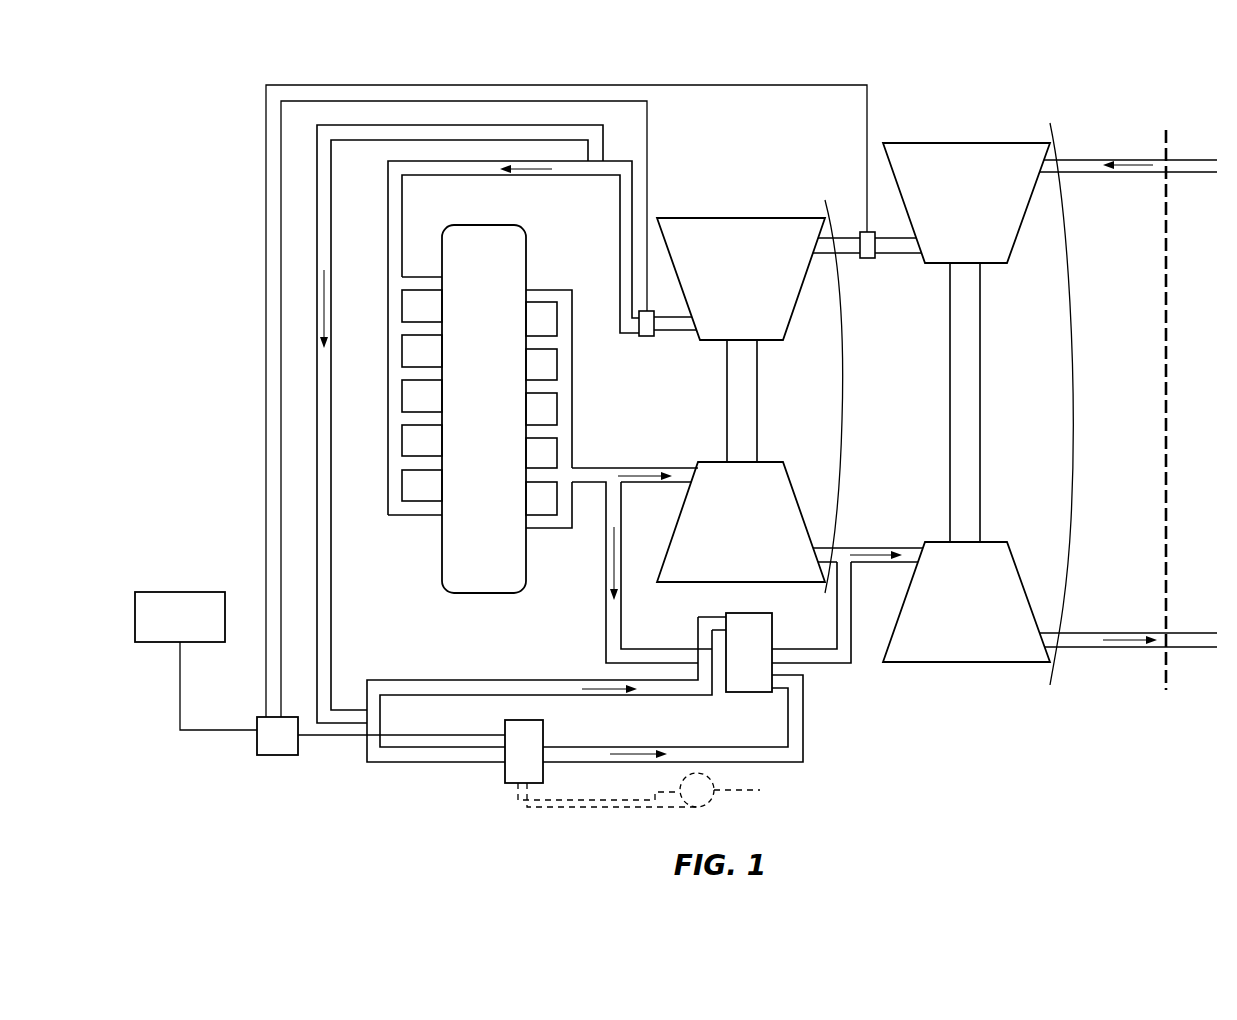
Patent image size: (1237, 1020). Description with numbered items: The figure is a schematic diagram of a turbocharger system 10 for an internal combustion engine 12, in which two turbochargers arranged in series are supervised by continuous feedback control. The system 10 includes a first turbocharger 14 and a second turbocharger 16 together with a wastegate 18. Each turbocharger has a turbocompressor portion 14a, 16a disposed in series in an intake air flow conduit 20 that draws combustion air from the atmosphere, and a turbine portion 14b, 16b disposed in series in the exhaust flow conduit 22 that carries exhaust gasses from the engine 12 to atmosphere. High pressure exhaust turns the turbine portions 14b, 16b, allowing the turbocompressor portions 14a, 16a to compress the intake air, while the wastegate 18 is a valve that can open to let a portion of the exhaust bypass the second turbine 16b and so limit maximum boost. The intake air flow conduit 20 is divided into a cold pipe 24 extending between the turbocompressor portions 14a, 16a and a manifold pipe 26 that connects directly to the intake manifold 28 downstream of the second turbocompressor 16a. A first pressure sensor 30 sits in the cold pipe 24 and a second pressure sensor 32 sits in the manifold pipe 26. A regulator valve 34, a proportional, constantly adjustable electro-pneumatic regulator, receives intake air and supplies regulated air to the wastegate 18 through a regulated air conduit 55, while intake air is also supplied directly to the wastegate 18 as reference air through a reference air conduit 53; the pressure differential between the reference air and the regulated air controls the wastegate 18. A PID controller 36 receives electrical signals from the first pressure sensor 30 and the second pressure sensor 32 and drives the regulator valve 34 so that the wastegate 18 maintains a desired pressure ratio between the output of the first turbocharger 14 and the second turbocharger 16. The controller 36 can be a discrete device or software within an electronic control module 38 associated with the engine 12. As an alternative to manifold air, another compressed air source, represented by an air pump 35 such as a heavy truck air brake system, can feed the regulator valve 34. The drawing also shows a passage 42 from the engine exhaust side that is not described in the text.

The turbocharger system 10 is at (958, 90).
The internal combustion engine 12 is at (527, 258).
The first turbocharger 14 is at (1072, 398).
The turbocompressor portion of first turbocharger 14a is at (953, 212).
The turbine portion of first turbocharger 14b is at (953, 622).
The second turbocharger 16 is at (840, 380).
The turbocompressor portion of second turbocharger 16a is at (725, 286).
The turbine portion of second turbocharger 16b is at (723, 539).
The wastegate 18 is at (738, 666).
The intake air flow conduit 20 is at (1195, 160).
The exhaust flow conduit 22 is at (597, 468).
The cold pipe 24 is at (897, 253).
The manifold pipe 26 is at (620, 196).
The intake manifold 28 is at (388, 300).
The first pressure sensor 30 is at (867, 258).
The second pressure sensor 32 is at (646, 336).
The regulator valve 34 is at (513, 761).
The air pump 35 is at (700, 808).
The PID controller 36 is at (267, 747).
The electronic control module 38 is at (180, 592).
The EGR passage 42 is at (606, 615).
The reference air conduit 53 is at (532, 680).
The regulated air conduit 55 is at (803, 744).